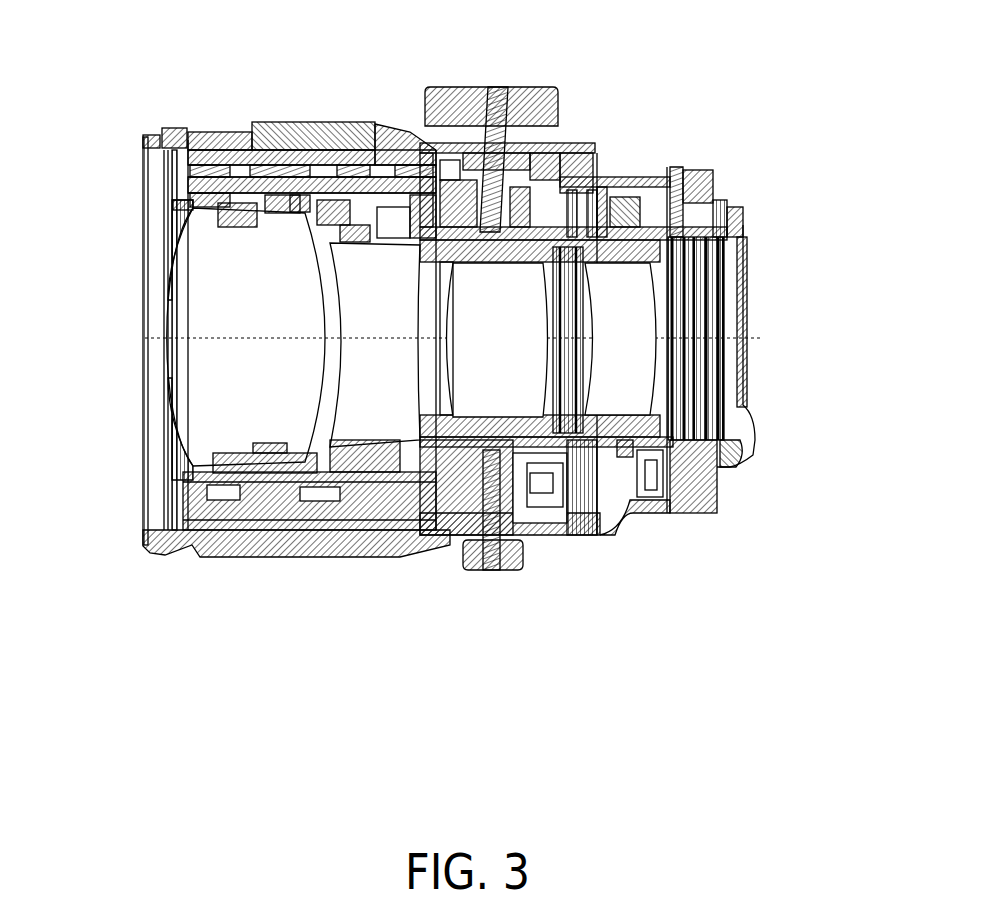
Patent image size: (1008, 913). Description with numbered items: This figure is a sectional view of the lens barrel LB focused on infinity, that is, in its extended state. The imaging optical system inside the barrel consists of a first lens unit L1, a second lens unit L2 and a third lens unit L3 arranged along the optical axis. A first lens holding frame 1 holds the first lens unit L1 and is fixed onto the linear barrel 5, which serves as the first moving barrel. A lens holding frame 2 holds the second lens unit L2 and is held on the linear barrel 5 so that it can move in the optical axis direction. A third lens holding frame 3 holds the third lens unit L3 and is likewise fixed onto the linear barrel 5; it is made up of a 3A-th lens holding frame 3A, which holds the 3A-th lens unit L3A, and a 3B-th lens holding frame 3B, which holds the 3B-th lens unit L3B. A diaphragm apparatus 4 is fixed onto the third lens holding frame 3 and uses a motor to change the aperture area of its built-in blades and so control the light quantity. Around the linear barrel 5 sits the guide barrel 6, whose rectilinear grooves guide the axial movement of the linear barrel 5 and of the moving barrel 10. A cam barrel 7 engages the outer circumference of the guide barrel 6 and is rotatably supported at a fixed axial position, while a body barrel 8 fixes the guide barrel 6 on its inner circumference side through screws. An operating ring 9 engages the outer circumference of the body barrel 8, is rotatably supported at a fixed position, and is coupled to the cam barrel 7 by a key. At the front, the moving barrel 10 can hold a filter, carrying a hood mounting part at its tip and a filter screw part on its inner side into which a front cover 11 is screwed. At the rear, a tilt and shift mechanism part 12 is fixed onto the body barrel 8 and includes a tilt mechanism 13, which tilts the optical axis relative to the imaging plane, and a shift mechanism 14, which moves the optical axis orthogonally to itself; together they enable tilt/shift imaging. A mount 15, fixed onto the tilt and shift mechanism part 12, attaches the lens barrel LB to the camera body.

The lens barrel LB is at (56, 58).
The first lens holding frame 1 is at (190, 157).
The lens holding frame 2 is at (352, 150).
The third lens holding frame 3 is at (522, 90).
The 3A-th lens holding frame 3A is at (443, 88).
The 3B-th lens holding frame 3B is at (607, 175).
The diaphragm apparatus 4 is at (562, 145).
The linear barrel 5 is at (386, 132).
The guide barrel 6 is at (244, 124).
The cam barrel 7 is at (214, 133).
The body barrel 8 is at (283, 150).
The operating ring 9 is at (318, 177).
The moving barrel 10 is at (150, 133).
The front cover 11 is at (185, 177).
The tilt and shift mechanism part 12 is at (683, 665).
The tilt mechanism 13 is at (577, 588).
The shift mechanism 14 is at (683, 565).
The mount 15 is at (740, 210).
The first lens unit L1 is at (192, 391).
The second lens unit L2 is at (347, 318).
The third lens unit L3 is at (837, 273).
The 3A-th lens unit L3A is at (517, 368).
The 3B-th lens unit L3B is at (633, 301).